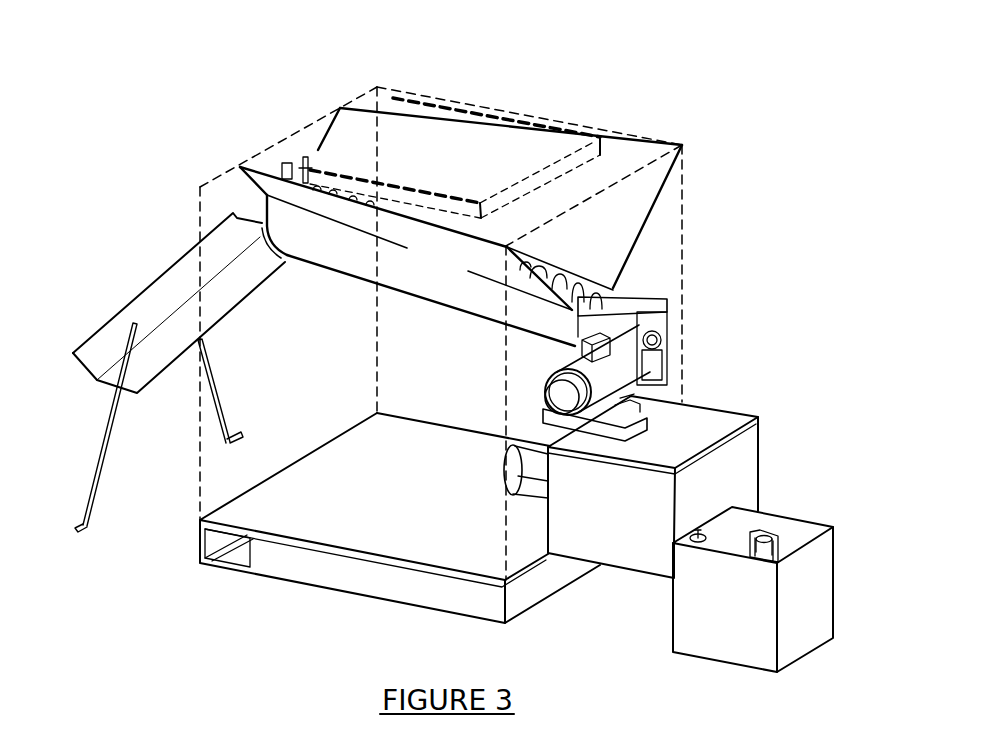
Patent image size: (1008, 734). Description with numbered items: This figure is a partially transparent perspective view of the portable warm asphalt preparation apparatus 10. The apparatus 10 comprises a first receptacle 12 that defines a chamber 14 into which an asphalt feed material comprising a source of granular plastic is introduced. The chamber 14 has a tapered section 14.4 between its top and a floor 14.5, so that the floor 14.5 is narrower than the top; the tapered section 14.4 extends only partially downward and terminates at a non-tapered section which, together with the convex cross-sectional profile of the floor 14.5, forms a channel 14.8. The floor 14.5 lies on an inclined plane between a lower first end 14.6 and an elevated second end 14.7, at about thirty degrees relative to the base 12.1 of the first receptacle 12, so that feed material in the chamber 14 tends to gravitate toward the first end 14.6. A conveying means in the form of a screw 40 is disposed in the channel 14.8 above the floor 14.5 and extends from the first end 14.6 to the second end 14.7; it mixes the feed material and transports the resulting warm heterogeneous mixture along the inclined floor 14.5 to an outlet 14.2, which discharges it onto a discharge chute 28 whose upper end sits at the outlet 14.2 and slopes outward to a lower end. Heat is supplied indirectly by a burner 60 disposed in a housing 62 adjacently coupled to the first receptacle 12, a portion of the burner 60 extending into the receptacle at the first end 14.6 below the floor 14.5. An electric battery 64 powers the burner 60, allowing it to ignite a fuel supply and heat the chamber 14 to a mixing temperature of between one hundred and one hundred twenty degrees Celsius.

The portable warm asphalt preparation apparatus 10 is at (784, 123).
The first receptacle 12 is at (365, 83).
The base 12.1 is at (350, 535).
The chamber 14 is at (611, 166).
The outlet 14.2 is at (277, 226).
The tapered section 14.4 is at (651, 214).
The floor 14.5 is at (468, 295).
The first end 14.6 is at (558, 343).
The second end 14.7 is at (279, 227).
The channel 14.8 is at (567, 360).
The discharge chute 28 is at (173, 313).
The screw 40 is at (563, 287).
The burner 60 is at (522, 470).
The housing 62 is at (752, 471).
The electric battery 64 is at (710, 595).